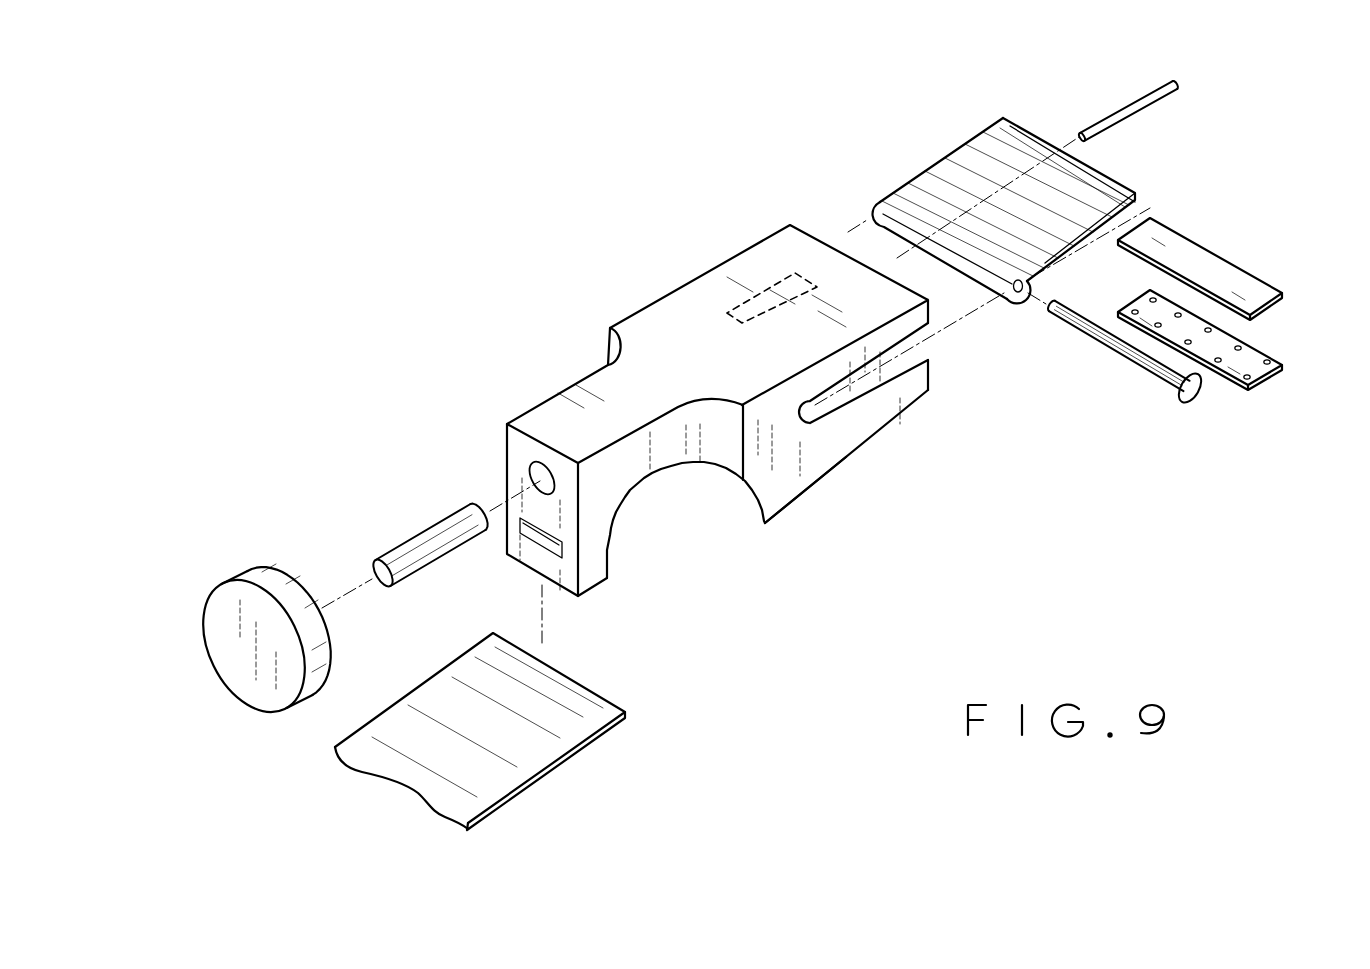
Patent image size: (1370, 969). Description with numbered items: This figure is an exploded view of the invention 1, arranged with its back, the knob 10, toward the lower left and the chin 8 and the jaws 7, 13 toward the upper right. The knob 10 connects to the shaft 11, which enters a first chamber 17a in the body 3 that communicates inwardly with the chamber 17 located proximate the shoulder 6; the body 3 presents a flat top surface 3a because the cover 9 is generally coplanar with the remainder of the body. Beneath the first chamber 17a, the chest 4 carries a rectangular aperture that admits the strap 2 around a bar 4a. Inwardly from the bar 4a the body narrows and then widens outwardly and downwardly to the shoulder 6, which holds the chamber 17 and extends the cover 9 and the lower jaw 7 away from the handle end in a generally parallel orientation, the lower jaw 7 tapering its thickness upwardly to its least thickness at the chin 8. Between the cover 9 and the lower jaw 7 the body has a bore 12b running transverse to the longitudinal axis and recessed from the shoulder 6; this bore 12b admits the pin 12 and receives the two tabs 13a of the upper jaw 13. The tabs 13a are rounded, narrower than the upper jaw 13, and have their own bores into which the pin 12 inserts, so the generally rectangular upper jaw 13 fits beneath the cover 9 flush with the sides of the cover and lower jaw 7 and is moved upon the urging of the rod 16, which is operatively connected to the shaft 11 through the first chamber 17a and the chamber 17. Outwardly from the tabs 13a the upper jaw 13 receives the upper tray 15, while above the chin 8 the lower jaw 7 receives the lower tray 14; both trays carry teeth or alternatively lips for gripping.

The invention 1 is at (629, 252).
The strap 2 is at (533, 745).
The body 3 is at (585, 322).
The flat top surface 3a is at (612, 407).
The chest 4 is at (574, 574).
The bar 4a is at (552, 548).
The shoulder 6 is at (783, 490).
The lower jaw 7 is at (813, 462).
The chin 8 is at (932, 386).
The cover 9 is at (808, 237).
The knob 10 is at (232, 575).
The shaft 11 is at (430, 522).
The pin 12 is at (1142, 357).
The bore 12b is at (810, 423).
The upper jaw 13 is at (973, 160).
The tabs 13a is at (884, 205).
The lower tray 14 is at (1275, 365).
The upper tray 15 is at (1198, 262).
The rod 16 is at (1157, 90).
The chamber 17 is at (742, 303).
The first chamber 17a is at (538, 473).